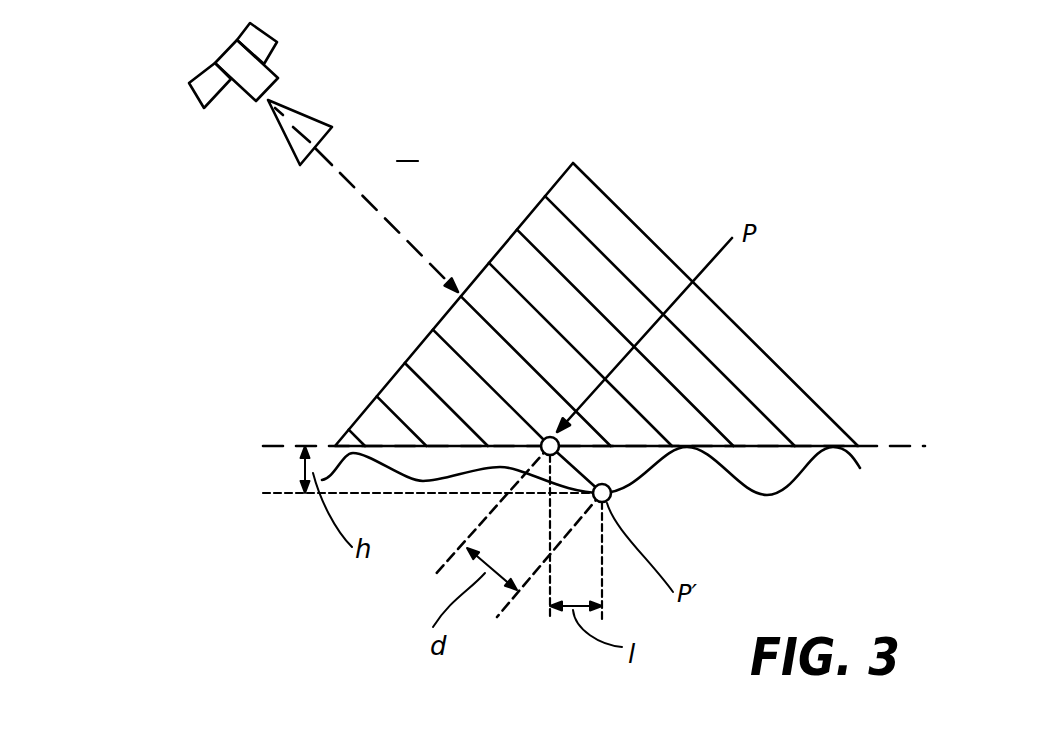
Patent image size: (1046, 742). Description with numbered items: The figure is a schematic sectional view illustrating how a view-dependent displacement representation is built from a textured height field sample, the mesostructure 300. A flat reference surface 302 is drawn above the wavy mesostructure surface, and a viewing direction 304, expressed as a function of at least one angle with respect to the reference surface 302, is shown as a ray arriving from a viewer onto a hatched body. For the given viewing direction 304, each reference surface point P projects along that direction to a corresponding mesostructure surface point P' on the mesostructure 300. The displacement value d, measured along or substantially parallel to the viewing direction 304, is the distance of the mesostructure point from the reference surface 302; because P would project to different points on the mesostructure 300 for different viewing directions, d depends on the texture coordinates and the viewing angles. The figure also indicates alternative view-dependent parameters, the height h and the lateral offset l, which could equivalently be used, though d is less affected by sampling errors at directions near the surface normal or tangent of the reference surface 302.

The mesostructure 300 is at (298, 542).
The reference surface 302 is at (283, 445).
The viewing direction 304 is at (333, 160).